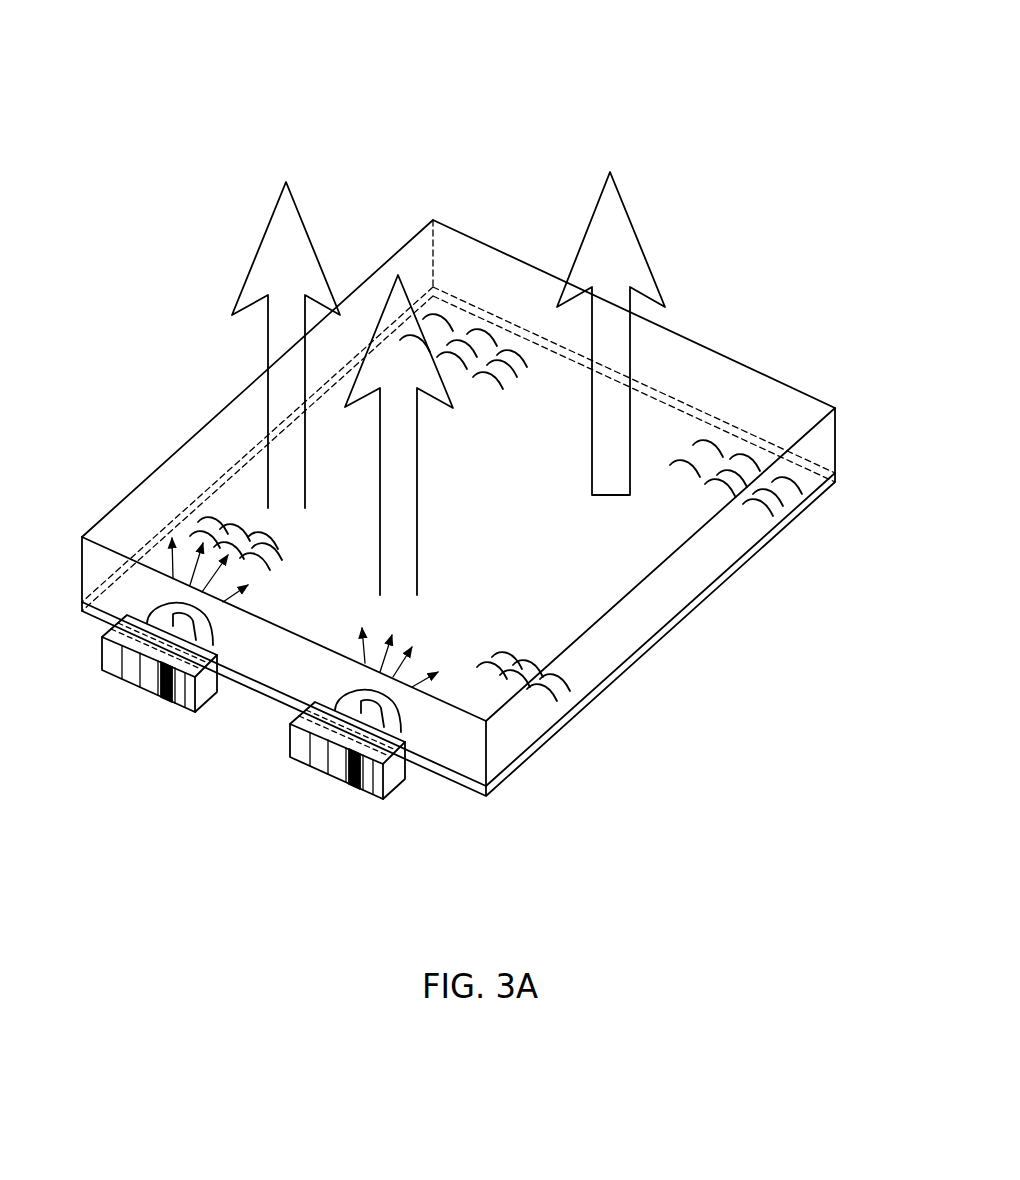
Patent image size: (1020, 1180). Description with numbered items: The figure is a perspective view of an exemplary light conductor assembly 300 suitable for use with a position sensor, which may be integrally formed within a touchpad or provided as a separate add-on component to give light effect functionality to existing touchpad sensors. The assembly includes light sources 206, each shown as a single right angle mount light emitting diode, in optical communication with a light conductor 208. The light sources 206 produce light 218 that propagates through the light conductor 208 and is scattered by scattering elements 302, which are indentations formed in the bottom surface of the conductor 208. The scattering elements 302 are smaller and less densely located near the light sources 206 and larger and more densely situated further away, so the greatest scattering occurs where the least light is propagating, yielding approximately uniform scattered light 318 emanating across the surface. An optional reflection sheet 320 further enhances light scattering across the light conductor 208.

The light conductor assembly 300 is at (680, 107).
The light conductor 208 is at (733, 395).
The reflection sheet 320 is at (722, 598).
The scattered light 318 is at (297, 235).
The scattering elements 302 is at (455, 330).
The light 218 is at (247, 585).
The light sources 206 is at (133, 670).